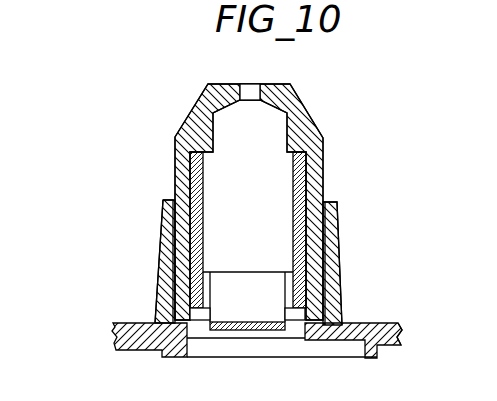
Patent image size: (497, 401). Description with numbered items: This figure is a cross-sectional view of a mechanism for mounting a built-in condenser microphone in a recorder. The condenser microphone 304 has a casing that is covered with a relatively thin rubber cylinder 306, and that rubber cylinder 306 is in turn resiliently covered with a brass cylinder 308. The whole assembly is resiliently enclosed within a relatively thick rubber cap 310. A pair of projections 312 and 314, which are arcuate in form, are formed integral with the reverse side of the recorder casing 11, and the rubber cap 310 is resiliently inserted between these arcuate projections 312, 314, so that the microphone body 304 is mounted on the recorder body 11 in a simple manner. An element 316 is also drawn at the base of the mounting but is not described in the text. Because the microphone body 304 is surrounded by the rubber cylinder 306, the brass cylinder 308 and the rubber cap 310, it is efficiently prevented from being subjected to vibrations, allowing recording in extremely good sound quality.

The rubber cap 310 is at (188, 124).
The condenser microphone 304 is at (288, 175).
The projection 312 is at (162, 285).
The projection 314 is at (336, 274).
The rubber cylinder 306 is at (297, 320).
The brass cylinder 308 is at (153, 347).
The insert plate 316 is at (245, 340).
The recorder casing 11 is at (400, 345).